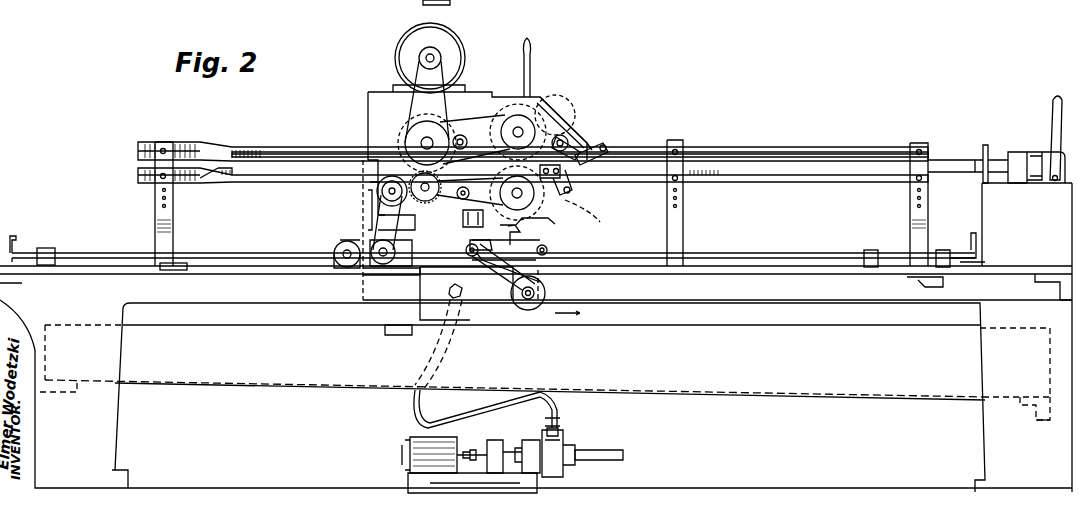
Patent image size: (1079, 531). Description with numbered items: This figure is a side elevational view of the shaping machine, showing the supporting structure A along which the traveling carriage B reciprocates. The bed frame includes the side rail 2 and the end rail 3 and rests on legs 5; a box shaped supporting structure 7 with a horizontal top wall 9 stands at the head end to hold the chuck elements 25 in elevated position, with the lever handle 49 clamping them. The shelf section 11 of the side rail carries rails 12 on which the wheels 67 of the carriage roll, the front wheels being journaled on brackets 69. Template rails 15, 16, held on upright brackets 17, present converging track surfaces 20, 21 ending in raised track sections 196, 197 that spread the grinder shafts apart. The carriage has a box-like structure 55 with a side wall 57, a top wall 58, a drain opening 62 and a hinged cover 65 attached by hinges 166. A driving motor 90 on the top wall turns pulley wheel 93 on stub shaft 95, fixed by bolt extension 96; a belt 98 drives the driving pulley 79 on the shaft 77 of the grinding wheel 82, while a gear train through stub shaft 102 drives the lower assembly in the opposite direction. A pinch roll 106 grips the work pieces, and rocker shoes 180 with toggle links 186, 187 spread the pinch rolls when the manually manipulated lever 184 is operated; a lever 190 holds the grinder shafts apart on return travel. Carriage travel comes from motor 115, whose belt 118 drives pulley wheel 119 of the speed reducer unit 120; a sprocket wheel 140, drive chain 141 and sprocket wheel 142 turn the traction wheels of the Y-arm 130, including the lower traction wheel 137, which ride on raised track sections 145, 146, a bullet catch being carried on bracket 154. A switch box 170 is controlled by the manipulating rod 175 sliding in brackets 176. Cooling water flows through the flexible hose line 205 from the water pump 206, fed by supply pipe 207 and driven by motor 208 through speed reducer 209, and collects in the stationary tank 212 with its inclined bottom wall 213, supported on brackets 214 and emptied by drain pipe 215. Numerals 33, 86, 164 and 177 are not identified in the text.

The side rail 2 is at (72, 274).
The end rail 3 is at (1060, 293).
The legs 5 is at (110, 425).
The box shaped supporting structure 7 is at (977, 222).
The horizontal top wall 9 is at (997, 184).
The shelf section 11 is at (1062, 190).
The rails 12 is at (98, 253).
The template rail 15 is at (285, 152).
The template rail 16 is at (278, 182).
The upright brackets 17 is at (155, 206).
The track surface 20 is at (240, 147).
The track surface 21 is at (242, 182).
The chuck elements 25 is at (1000, 152).
The collar 33 is at (1036, 182).
The lever handle 49 is at (1052, 120).
The box-like structure 55 is at (355, 188).
The side wall 57 is at (477, 126).
The top wall 58 is at (478, 95).
The drain opening 62 is at (385, 335).
The hinged cover 65 is at (580, 130).
The wheels 67 is at (355, 268).
The brackets 69 is at (358, 240).
The shaft 77 is at (506, 118).
The driving pulley 79 is at (522, 127).
The grinding wheel 82 is at (560, 96).
The roller 86 is at (472, 173).
The driving motor 90 is at (448, 36).
The pulley wheel 93 is at (405, 148).
The stub shaft 95 is at (427, 137).
The bolt extension 96 is at (452, 138).
The belt 98 is at (461, 176).
The stub shaft 102 is at (392, 176).
The roll 106 is at (618, 205).
The motor 115 is at (362, 214).
The belt 118 is at (390, 230).
The pulley wheel 119 is at (383, 268).
The speed reducer unit 120 is at (396, 253).
The Y-arm 130 is at (500, 287).
The lower traction wheel 137 is at (546, 293).
The second sprocket wheel 140 is at (463, 5).
The drive chain 141 is at (519, 6).
The sprocket wheel 142 is at (551, 5).
The raised track section 145 is at (188, 263).
The raised track section 146 is at (920, 284).
The bracket 154 is at (463, 222).
The part 164 is at (988, 4).
The hinges 166 is at (552, 232).
The switch box 170 is at (983, 265).
The manipulating rod 175 is at (36, 242).
The brackets 176 is at (50, 248).
The hook 177 is at (14, 236).
The rocker shoes 180 is at (595, 180).
The manually manipulated lever 184 is at (986, 145).
The toggle link 186 is at (598, 142).
The toggle link 187 is at (580, 210).
The lever 190 is at (532, 44).
The raised track section 196 is at (190, 142).
The raised track section 197 is at (195, 184).
The flexible hose line 205 is at (410, 408).
The water pump 206 is at (575, 435).
The supply pipe 207 is at (618, 452).
The motor 208 is at (410, 438).
The speed reducer 209 is at (497, 442).
The stationary tank 212 is at (243, 383).
The inclined bottom wall 213 is at (790, 392).
The brackets 214 is at (65, 390).
The drain pipe 215 is at (1055, 430).
The supporting structure A is at (178, 310).
The traveling carriage B is at (318, 152).